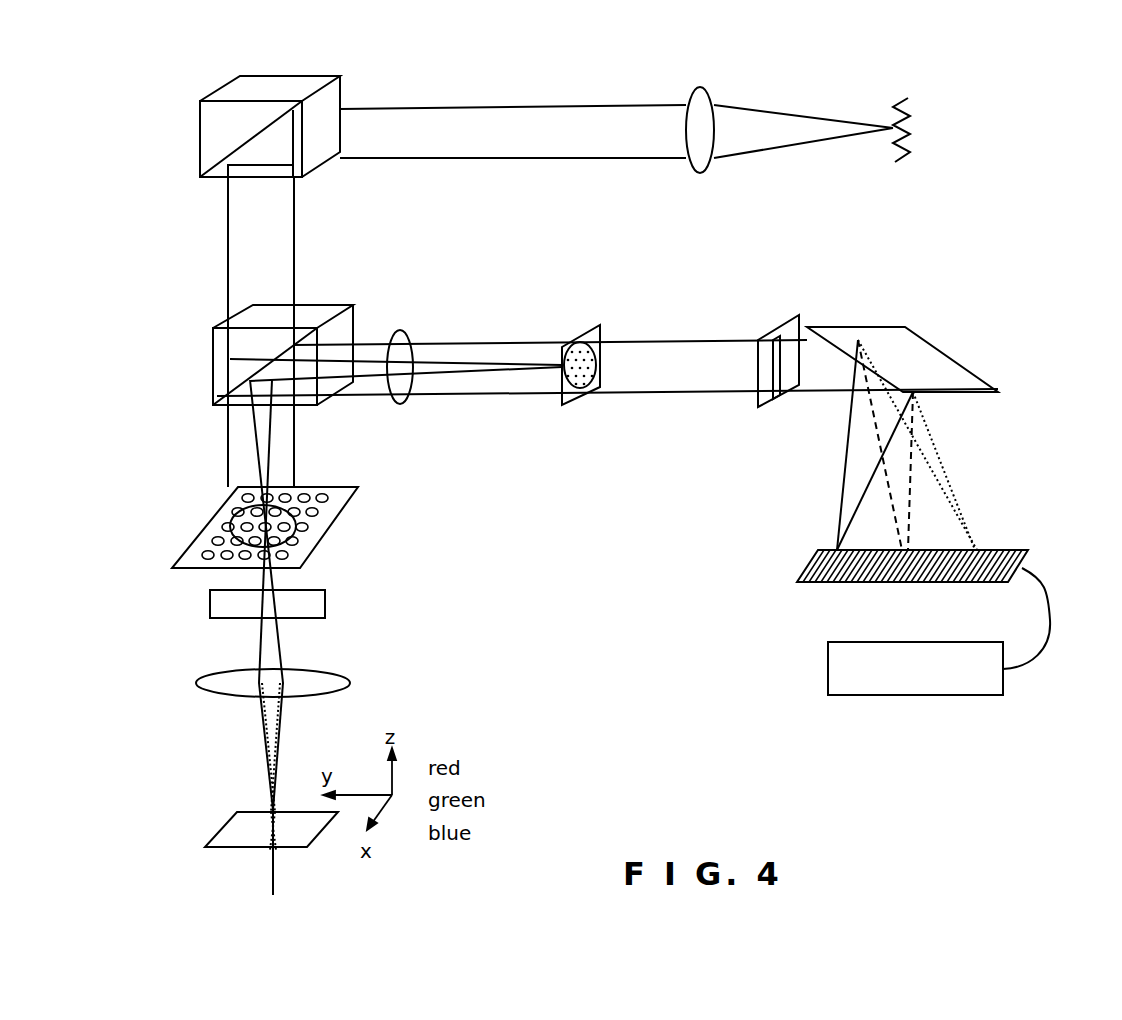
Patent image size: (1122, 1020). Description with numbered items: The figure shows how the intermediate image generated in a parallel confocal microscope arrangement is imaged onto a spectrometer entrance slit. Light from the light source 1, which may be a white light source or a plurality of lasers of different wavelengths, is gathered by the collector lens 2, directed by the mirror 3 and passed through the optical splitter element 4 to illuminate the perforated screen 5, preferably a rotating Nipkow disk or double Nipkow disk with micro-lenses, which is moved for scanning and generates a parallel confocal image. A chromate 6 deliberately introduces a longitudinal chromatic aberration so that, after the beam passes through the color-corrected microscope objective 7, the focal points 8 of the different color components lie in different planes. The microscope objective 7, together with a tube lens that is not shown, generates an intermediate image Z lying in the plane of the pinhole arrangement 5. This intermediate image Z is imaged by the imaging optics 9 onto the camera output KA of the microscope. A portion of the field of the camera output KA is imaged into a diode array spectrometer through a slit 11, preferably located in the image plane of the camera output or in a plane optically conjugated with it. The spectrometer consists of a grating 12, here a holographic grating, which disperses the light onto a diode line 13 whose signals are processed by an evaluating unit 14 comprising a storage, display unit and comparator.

The light source 1 is at (908, 96).
The collector lens 2 is at (707, 87).
The mirror 3 is at (200, 130).
The optical splitter element 4 is at (332, 302).
The perforated screen 5 is at (230, 507).
The chromate 6 is at (210, 600).
The microscope objective 7 is at (197, 690).
The focal points 8 is at (215, 835).
The imaging optics 9 is at (400, 331).
The slit 11 is at (773, 400).
The grating 12 is at (965, 368).
The diode line 13 is at (1026, 550).
The evaluating unit 14 is at (939, 631).
The camera output KA is at (585, 340).
The intermediate image Z is at (310, 535).